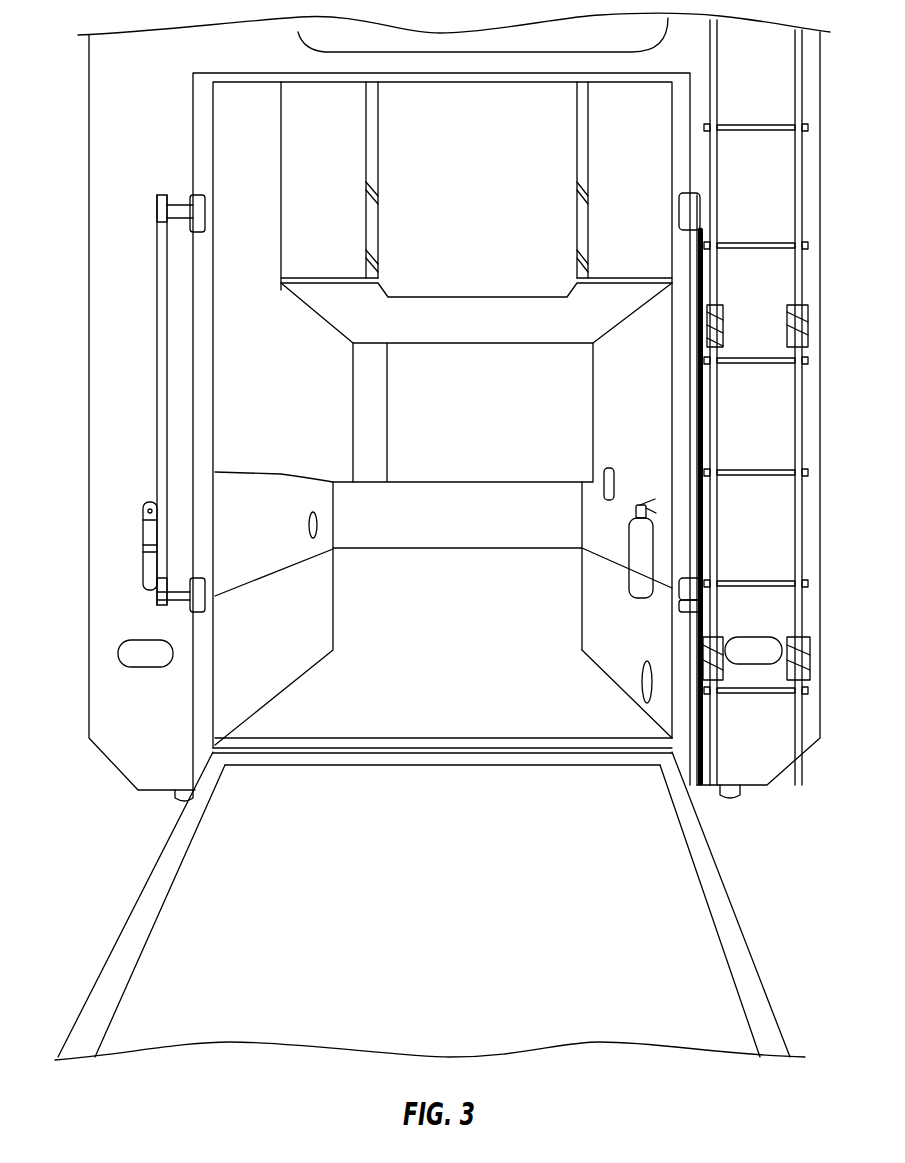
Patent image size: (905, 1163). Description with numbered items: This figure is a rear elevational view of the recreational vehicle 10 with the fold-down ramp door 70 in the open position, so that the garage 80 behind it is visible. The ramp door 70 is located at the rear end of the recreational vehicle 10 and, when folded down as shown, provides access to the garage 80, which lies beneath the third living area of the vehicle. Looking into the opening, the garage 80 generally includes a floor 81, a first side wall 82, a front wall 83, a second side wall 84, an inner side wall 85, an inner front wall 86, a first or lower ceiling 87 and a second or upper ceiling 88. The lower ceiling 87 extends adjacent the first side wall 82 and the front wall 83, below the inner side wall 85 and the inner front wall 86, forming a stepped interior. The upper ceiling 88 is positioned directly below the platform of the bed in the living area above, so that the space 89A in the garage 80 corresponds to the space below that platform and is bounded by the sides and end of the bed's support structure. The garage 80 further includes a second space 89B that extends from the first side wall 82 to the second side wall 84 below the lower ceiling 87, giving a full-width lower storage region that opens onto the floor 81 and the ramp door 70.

The recreational vehicle 10 is at (100, 520).
The fold-down ramp door 70 is at (680, 898).
The garage 80 is at (108, 155).
The floor 81 is at (260, 720).
The first side wall 82 is at (228, 518).
The front wall 83 is at (462, 505).
The second side wall 84 is at (662, 459).
The inner side wall 85 is at (304, 380).
The inner front wall 86 is at (577, 425).
The lower ceiling 87 is at (223, 476).
The upper ceiling 88 is at (490, 331).
The space 89A is at (399, 354).
The second space 89B is at (465, 565).